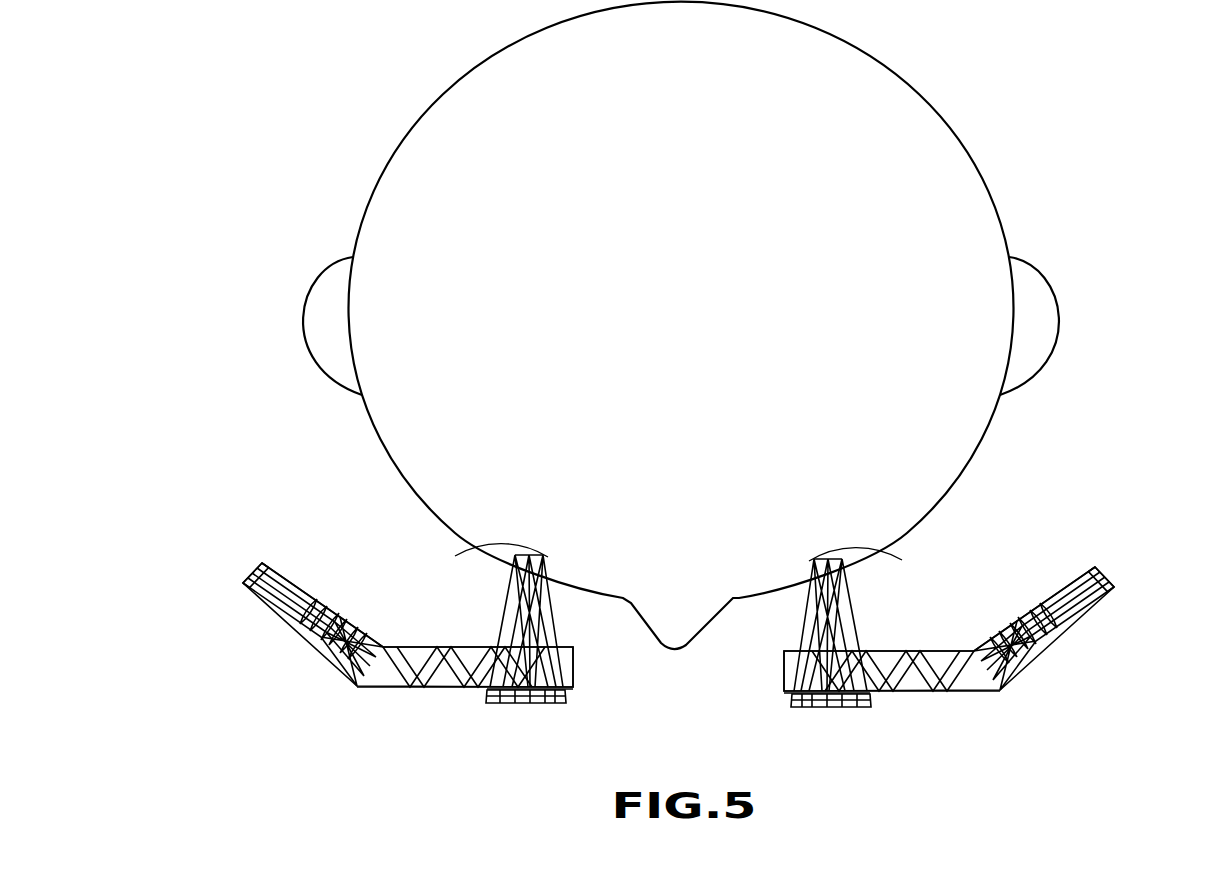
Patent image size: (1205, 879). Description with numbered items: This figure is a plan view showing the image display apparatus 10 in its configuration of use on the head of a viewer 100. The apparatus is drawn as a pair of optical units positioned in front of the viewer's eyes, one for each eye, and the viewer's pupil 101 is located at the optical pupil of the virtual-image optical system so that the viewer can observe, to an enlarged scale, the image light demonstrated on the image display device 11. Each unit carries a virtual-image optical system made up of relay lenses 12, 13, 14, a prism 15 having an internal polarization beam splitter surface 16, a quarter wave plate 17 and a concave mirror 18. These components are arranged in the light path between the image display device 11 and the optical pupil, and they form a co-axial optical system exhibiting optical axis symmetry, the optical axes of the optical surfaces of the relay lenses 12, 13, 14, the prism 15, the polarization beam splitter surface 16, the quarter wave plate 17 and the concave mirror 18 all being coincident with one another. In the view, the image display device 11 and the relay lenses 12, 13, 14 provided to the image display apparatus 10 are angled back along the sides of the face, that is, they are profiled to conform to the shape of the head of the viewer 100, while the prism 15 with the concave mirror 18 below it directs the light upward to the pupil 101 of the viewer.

The viewer 100 is at (1020, 118).
The pupil 101 is at (473, 551).
The image display apparatus 10 is at (258, 646).
The image display device 11 is at (259, 565).
The relay lens 12 is at (310, 643).
The relay lens 13 is at (322, 645).
The relay lens 14 is at (344, 659).
The prism 15 is at (447, 690).
The polarization beam splitter surface 16 is at (563, 666).
The quarter wave plate 17 is at (568, 690).
The concave mirror 18 is at (540, 704).